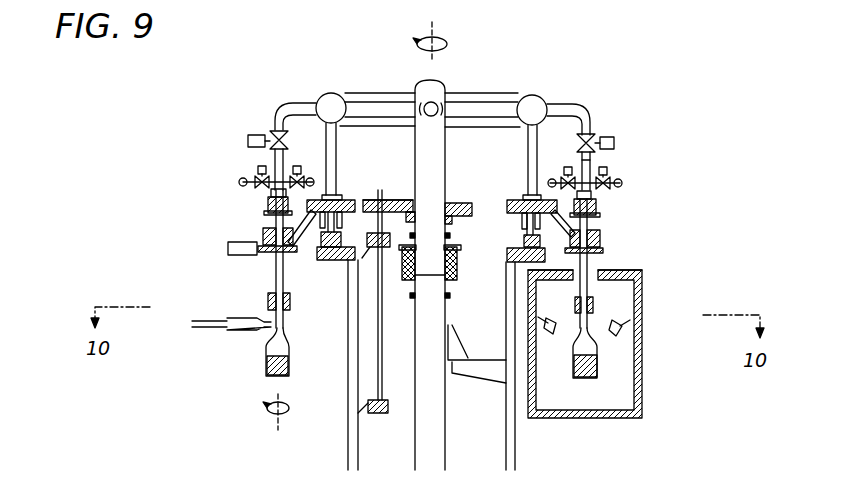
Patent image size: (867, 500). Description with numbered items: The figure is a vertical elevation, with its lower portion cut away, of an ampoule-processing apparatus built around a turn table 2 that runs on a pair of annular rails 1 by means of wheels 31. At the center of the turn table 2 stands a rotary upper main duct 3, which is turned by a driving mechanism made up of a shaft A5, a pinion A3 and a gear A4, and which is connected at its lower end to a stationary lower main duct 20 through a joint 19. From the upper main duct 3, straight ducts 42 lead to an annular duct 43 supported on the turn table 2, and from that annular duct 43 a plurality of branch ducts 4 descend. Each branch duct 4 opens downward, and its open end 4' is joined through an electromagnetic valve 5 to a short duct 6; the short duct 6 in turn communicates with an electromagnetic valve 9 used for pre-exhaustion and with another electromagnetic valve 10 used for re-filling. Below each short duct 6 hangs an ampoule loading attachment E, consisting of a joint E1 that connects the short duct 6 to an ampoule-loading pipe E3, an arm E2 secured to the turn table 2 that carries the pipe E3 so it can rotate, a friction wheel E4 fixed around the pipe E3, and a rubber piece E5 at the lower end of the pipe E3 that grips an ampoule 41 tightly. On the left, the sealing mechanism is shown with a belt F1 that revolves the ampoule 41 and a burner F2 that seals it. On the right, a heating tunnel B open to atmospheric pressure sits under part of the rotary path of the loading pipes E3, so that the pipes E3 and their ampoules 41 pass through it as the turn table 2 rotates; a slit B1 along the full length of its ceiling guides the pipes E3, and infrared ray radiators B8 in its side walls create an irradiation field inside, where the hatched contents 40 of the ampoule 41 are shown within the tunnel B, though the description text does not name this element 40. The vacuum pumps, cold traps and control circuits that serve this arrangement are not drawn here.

The annular rails 1 is at (524, 240).
The turn table 2 is at (347, 198).
The upper main duct 3 is at (448, 92).
The branch duct 4 is at (571, 112).
The open end of branch duct 4' is at (471, 132).
The electromagnetic valve 5 is at (615, 132).
The short duct 6 is at (591, 160).
The electromagnetic valve for pre-exhaustion 9 is at (553, 170).
The electromagnetic valve for re-filling 10 is at (602, 190).
The joint 19 is at (440, 263).
The lower main duct 20 is at (447, 408).
The wheels 31 is at (512, 218).
The filling material 40 is at (598, 370).
The ampoule 41 is at (264, 369).
The straight ducts 42 is at (534, 96).
The annular duct 43 is at (492, 102).
The pinion A3 is at (388, 200).
The gear A4 is at (414, 200).
The shaft A5 is at (377, 380).
The heating tunnel B is at (643, 292).
The slit B1 is at (600, 272).
The infrared ray radiators B8 is at (622, 333).
The ampoule loading attachment E is at (258, 236).
The joint E1 is at (268, 199).
The arm E2 is at (306, 243).
The ampoule-loading pipe E3 is at (270, 214).
The friction wheel E4 is at (262, 252).
The rubber piece E5 is at (267, 302).
The belt F1 is at (228, 250).
The burner F2 is at (237, 331).